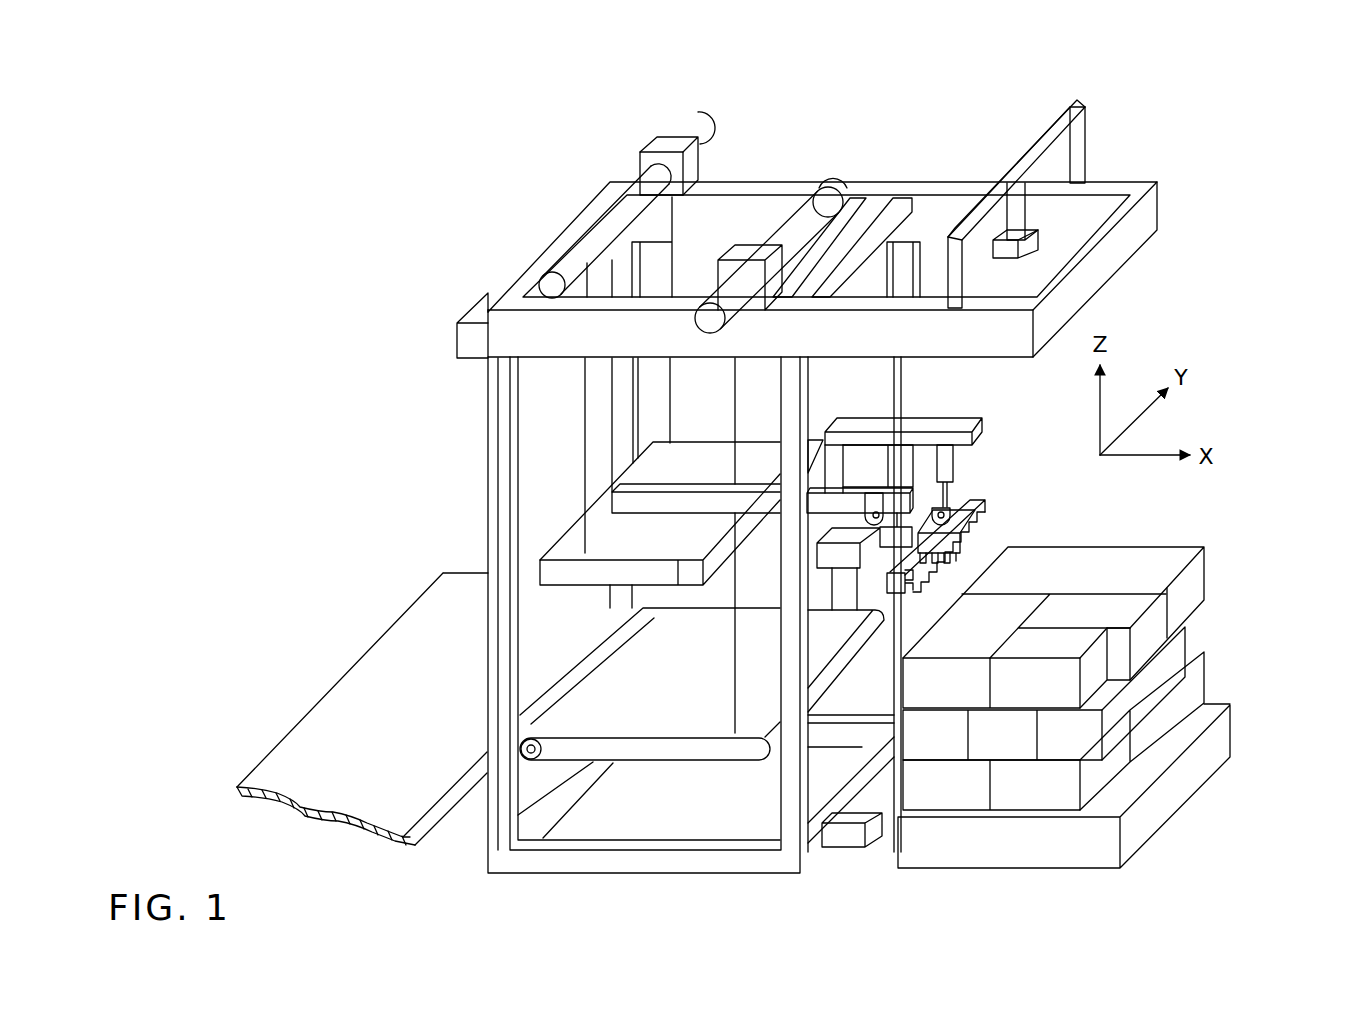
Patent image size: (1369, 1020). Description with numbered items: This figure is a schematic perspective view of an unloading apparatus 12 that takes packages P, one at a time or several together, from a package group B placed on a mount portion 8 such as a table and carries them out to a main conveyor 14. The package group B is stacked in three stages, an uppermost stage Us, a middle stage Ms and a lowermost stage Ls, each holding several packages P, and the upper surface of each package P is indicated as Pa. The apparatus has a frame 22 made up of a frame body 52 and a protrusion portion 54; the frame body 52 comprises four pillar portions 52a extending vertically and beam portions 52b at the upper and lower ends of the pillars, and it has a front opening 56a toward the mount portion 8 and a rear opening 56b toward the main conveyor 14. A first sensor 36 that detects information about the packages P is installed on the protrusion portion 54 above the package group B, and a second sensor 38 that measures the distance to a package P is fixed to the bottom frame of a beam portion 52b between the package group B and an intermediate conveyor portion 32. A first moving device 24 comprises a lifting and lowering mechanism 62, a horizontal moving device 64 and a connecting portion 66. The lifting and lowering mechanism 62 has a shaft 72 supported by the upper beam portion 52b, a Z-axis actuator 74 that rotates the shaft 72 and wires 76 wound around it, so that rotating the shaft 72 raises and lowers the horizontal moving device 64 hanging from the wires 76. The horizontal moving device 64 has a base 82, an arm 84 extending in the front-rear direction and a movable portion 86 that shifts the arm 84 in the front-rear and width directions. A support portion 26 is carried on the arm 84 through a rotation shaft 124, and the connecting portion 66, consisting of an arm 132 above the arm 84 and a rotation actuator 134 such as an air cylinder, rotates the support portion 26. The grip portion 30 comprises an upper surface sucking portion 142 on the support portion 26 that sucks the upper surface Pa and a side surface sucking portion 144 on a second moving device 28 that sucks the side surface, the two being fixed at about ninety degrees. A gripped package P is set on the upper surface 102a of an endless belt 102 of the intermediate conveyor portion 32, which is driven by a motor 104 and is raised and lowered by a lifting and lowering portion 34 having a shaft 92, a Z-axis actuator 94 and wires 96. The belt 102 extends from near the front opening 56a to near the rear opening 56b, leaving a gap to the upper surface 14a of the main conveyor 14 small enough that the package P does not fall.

The mount portion 8 is at (1216, 712).
The unloading apparatus 12 is at (1165, 294).
The main conveyor 14 is at (362, 709).
The upper surface of the main conveyor 14a is at (340, 707).
The frame 22 is at (890, 57).
The first moving device 24 is at (611, 511).
The support portion 26 is at (977, 546).
The second moving device 28 is at (847, 577).
The grip portion 30 is at (943, 567).
The intermediate conveyor portion 32 is at (589, 723).
The lifting and lowering portion 34 is at (764, 232).
The first sensor 36 is at (1028, 248).
The second sensor 38 is at (868, 843).
The frame body 52 is at (885, 178).
The pillar portions 52a is at (620, 253).
The beam portions 52b is at (562, 242).
The protrusion portion 54 is at (943, 176).
The front opening 56a is at (897, 400).
The rear opening 56b is at (548, 397).
The lifting and lowering mechanism 62 is at (607, 185).
The horizontal moving device 64 is at (698, 435).
The connecting portion 66 is at (942, 442).
The shaft 72 is at (602, 232).
The Z-axis actuator 74 is at (695, 128).
The wires 76 is at (660, 160).
The base 82 is at (667, 560).
The arm 84 is at (653, 502).
The movable portion 86 is at (700, 560).
The shaft 92 is at (812, 218).
The Z-axis actuator 94 is at (727, 285).
The wires 96 is at (860, 197).
The belt 102 is at (638, 725).
The upper surface of the belt 102a is at (620, 688).
The motor 104 is at (488, 757).
The rotation shaft 124 is at (877, 508).
The arm 132 is at (868, 423).
The rotation actuator 134 is at (960, 458).
The upper surface sucking portion 142 is at (980, 513).
The side surface sucking portion 144 is at (895, 590).
The package P is at (1011, 596).
The upper surface of the package Pa is at (1143, 564).
The package group B is at (1098, 698).
The uppermost stage Us is at (1214, 560).
The middle stage Ms is at (1194, 639).
The lowermost stage Ls is at (1214, 680).